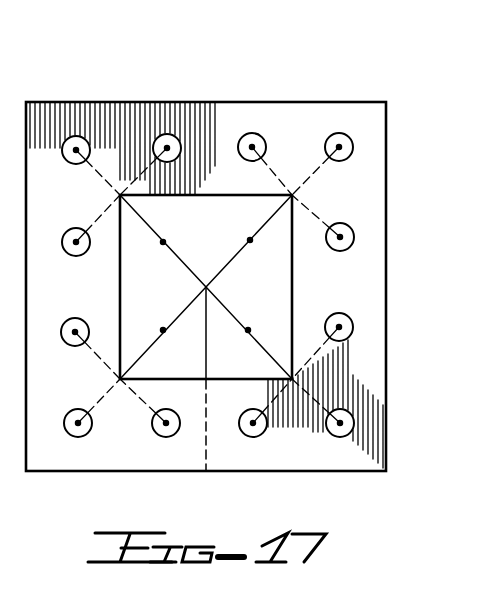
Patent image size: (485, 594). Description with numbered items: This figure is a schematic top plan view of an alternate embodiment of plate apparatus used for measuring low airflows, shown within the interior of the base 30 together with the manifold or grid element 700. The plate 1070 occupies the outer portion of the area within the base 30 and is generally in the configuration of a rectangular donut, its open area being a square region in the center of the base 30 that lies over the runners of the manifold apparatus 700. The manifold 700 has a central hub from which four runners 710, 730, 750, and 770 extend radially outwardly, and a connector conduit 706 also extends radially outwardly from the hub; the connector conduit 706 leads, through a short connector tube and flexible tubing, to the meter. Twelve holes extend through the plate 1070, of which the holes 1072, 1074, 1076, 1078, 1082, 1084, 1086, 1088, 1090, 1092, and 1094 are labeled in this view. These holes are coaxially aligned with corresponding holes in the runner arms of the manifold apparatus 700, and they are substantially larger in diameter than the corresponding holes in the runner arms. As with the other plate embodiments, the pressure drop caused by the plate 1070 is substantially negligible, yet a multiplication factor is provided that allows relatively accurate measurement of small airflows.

The base 30 is at (95, 92).
The plate 1070 is at (301, 120).
The manifold or grid element 700 is at (162, 226).
The connector conduit 706 is at (207, 352).
The runner 710 is at (181, 307).
The runner 730 is at (183, 265).
The runner 750 is at (228, 262).
The runner 770 is at (260, 314).
The hole 1072 is at (67, 160).
The hole 1074 is at (184, 129).
The hole 1076 is at (246, 137).
The hole 1078 is at (350, 143).
The hole 1082 is at (352, 232).
The hole 1084 is at (89, 317).
The hole 1086 is at (350, 320).
The hole 1088 is at (86, 440).
The hole 1090 is at (163, 440).
The hole 1092 is at (250, 440).
The hole 1094 is at (338, 440).